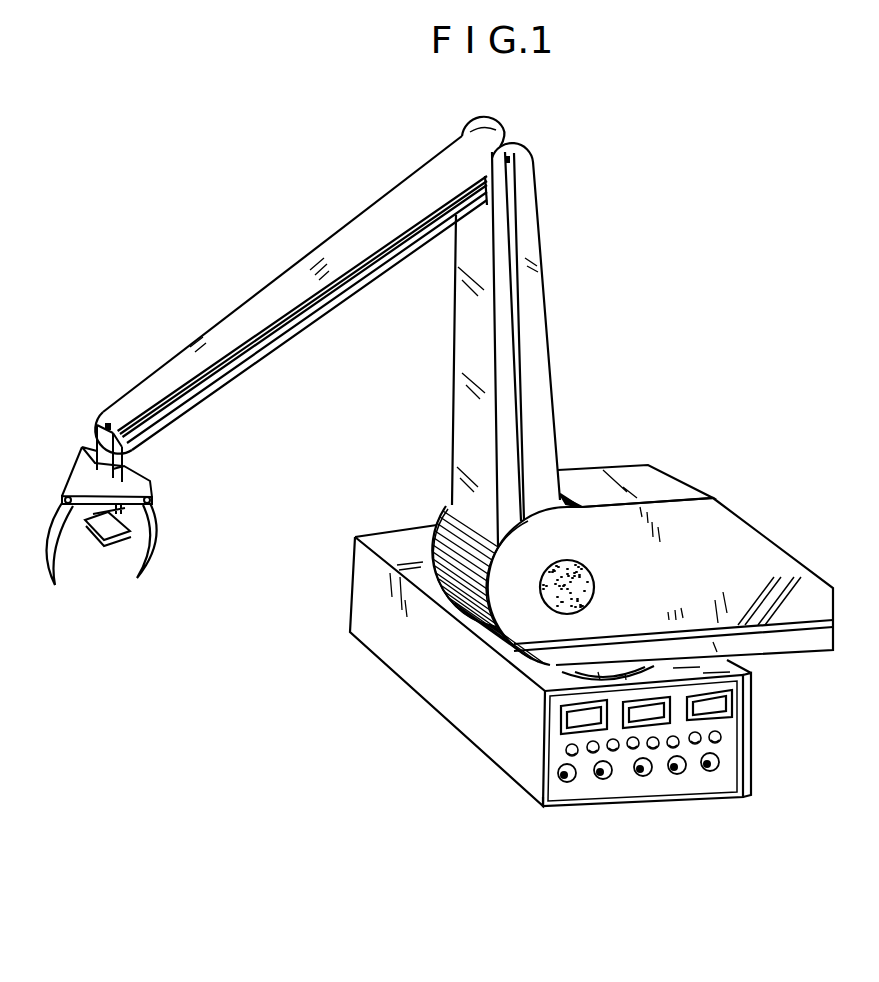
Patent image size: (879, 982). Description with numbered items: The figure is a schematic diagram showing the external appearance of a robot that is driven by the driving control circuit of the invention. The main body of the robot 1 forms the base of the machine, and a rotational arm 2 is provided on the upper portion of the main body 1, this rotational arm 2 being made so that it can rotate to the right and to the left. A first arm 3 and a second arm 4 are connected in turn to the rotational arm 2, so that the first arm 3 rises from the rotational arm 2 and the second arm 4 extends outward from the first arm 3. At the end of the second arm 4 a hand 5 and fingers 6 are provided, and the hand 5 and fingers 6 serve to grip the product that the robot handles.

The main body of the robot 1 is at (660, 785).
The rotational arm 2 is at (620, 672).
The first arm 3 is at (540, 328).
The second arm 4 is at (250, 318).
The hand 5 is at (105, 535).
The fingers 6 is at (55, 585).